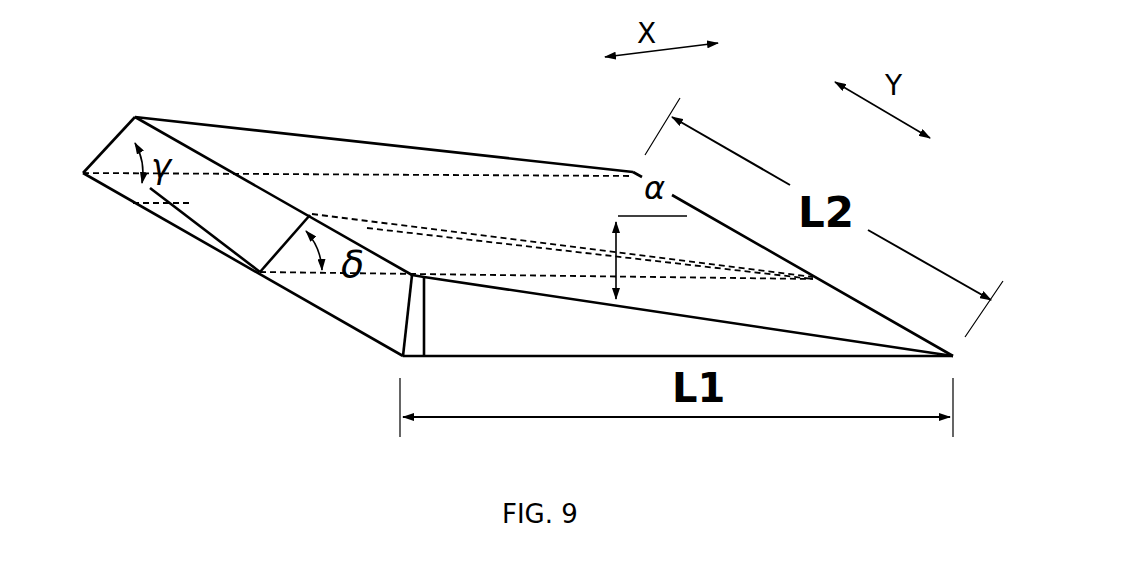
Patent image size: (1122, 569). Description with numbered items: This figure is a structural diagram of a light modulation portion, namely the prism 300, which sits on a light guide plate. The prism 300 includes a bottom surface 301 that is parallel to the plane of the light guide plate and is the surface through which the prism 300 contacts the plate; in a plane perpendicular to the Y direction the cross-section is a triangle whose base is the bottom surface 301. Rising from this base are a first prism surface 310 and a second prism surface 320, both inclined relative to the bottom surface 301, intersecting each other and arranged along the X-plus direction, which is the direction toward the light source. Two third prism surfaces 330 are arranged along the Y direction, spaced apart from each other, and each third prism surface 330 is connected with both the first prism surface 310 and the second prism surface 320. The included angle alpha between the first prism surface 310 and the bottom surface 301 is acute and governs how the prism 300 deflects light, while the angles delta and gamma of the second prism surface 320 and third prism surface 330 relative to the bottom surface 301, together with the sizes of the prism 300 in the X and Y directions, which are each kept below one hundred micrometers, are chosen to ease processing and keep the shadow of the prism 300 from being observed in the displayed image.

The prism 300 is at (482, 150).
The first prism surface 310 is at (308, 137).
The second prism surface 320 is at (253, 216).
The bottom surface 301 is at (447, 357).
The third prism surface 330 is at (497, 333).